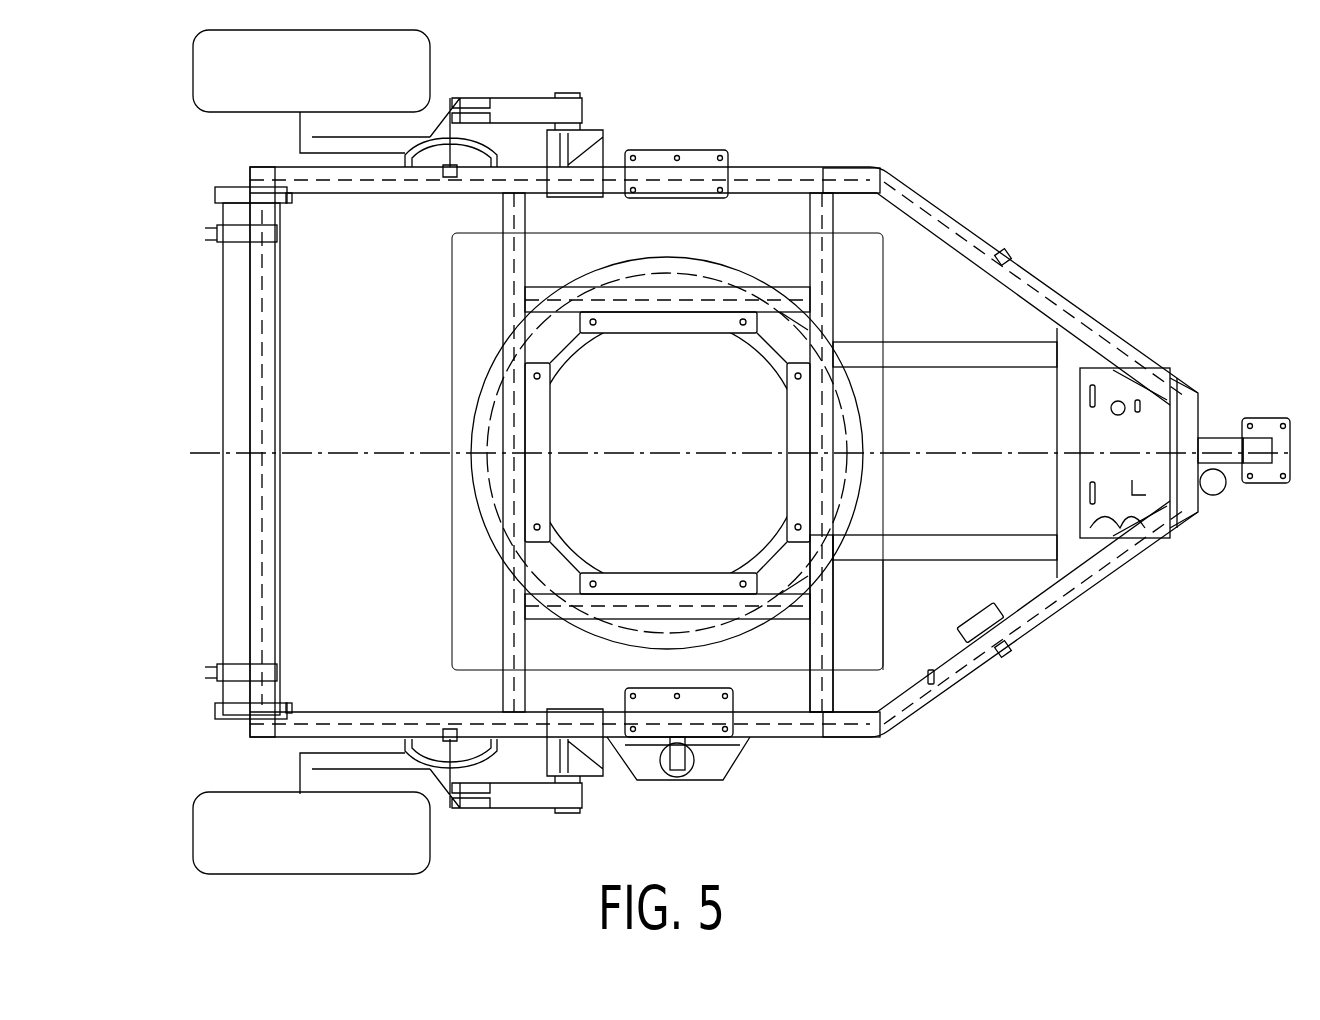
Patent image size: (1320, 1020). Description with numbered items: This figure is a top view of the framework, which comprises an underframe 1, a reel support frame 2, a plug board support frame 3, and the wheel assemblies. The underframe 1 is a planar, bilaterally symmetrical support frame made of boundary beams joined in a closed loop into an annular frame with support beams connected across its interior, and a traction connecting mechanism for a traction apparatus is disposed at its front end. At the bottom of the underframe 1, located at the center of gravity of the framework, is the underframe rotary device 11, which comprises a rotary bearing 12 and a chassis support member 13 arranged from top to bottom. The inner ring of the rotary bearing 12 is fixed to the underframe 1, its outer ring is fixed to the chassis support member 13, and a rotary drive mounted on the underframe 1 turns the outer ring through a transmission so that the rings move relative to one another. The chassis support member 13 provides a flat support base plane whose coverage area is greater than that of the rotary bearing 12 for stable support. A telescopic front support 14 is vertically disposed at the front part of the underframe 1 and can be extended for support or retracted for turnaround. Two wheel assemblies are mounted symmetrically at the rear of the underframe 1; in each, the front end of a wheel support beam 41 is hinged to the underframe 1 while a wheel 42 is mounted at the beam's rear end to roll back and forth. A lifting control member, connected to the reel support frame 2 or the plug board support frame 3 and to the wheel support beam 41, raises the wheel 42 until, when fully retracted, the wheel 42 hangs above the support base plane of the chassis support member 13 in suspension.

The underframe 1 is at (770, 452).
The underframe rotary device 11 is at (721, 357).
The rotary bearing 12 is at (680, 346).
The chassis support member 13 is at (926, 646).
The telescopic front support 14 is at (1191, 534).
The reel support frame 2 is at (705, 121).
The plug board support frame 3 is at (195, 453).
The wheel support beam 41 is at (495, 120).
The wheel 42 is at (264, 141).